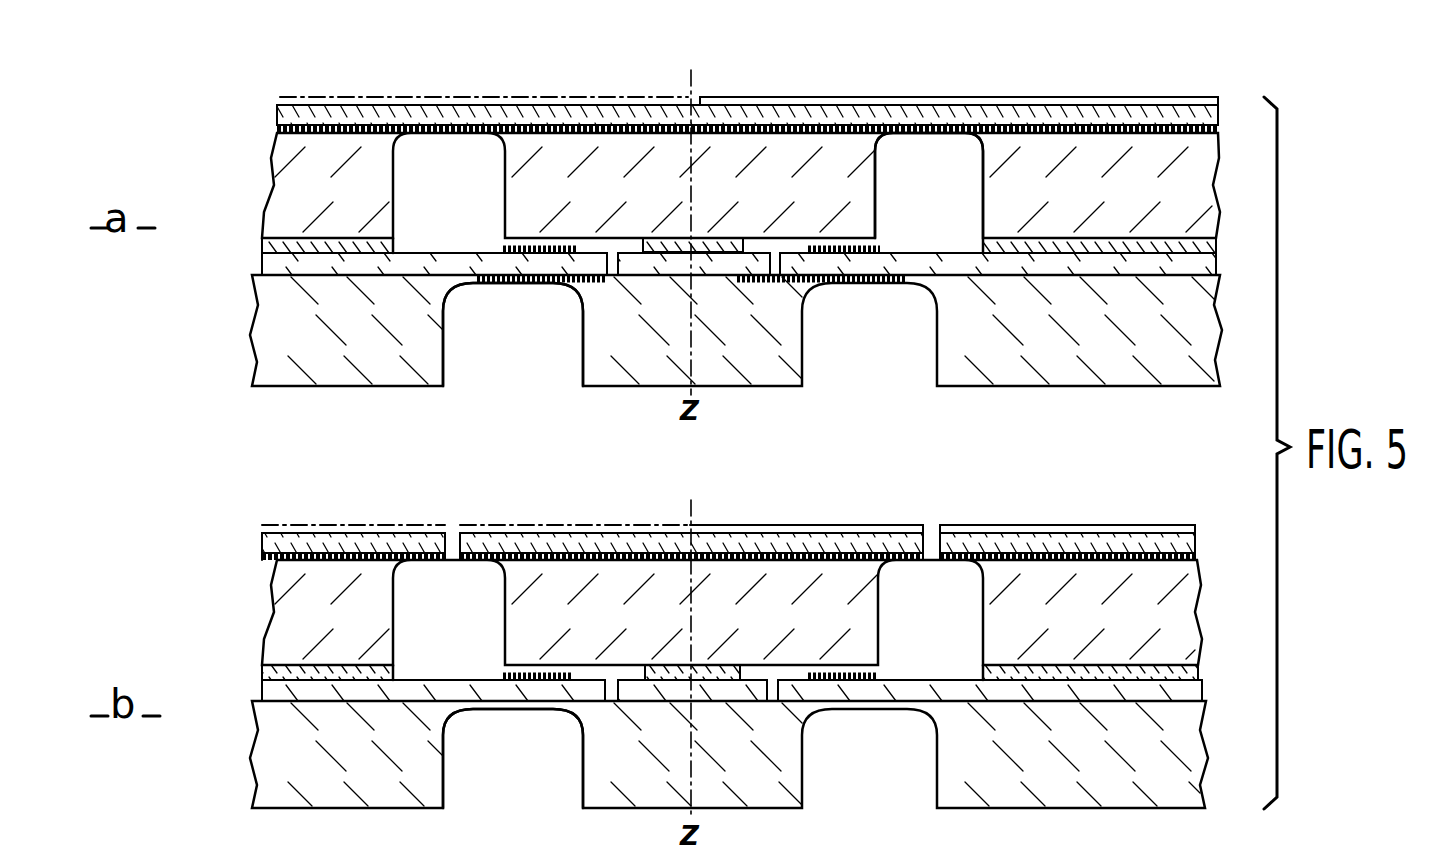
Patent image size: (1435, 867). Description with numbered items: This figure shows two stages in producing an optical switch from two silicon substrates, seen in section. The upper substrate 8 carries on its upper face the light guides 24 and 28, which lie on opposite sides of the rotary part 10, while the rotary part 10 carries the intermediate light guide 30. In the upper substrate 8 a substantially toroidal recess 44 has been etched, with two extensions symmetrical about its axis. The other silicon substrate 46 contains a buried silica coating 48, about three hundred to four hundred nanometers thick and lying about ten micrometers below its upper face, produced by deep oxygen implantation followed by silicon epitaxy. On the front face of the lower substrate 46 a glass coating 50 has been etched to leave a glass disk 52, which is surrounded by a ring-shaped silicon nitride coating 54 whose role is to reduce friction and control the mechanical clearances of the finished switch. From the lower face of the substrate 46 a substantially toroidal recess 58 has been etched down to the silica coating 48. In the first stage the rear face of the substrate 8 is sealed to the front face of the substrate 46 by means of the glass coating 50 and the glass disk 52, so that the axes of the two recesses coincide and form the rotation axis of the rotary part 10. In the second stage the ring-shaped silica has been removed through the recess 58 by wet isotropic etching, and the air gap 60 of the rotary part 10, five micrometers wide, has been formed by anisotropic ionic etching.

The upper substrate 8 is at (292, 152).
The rotary part 10 is at (633, 520).
The light guide 24 is at (330, 524).
The light guide 28 is at (832, 102).
The intermediate light guide 30 is at (868, 525).
The recess 44 is at (937, 158).
The lower silicon substrate 46 is at (292, 337).
The silica coating 48 is at (790, 292).
The glass coating 50 is at (1110, 250).
The glass disk 52 is at (727, 240).
The ring-shaped silicon nitride coating 54 is at (548, 246).
The recess 58 is at (482, 348).
The air gap 60 is at (932, 537).